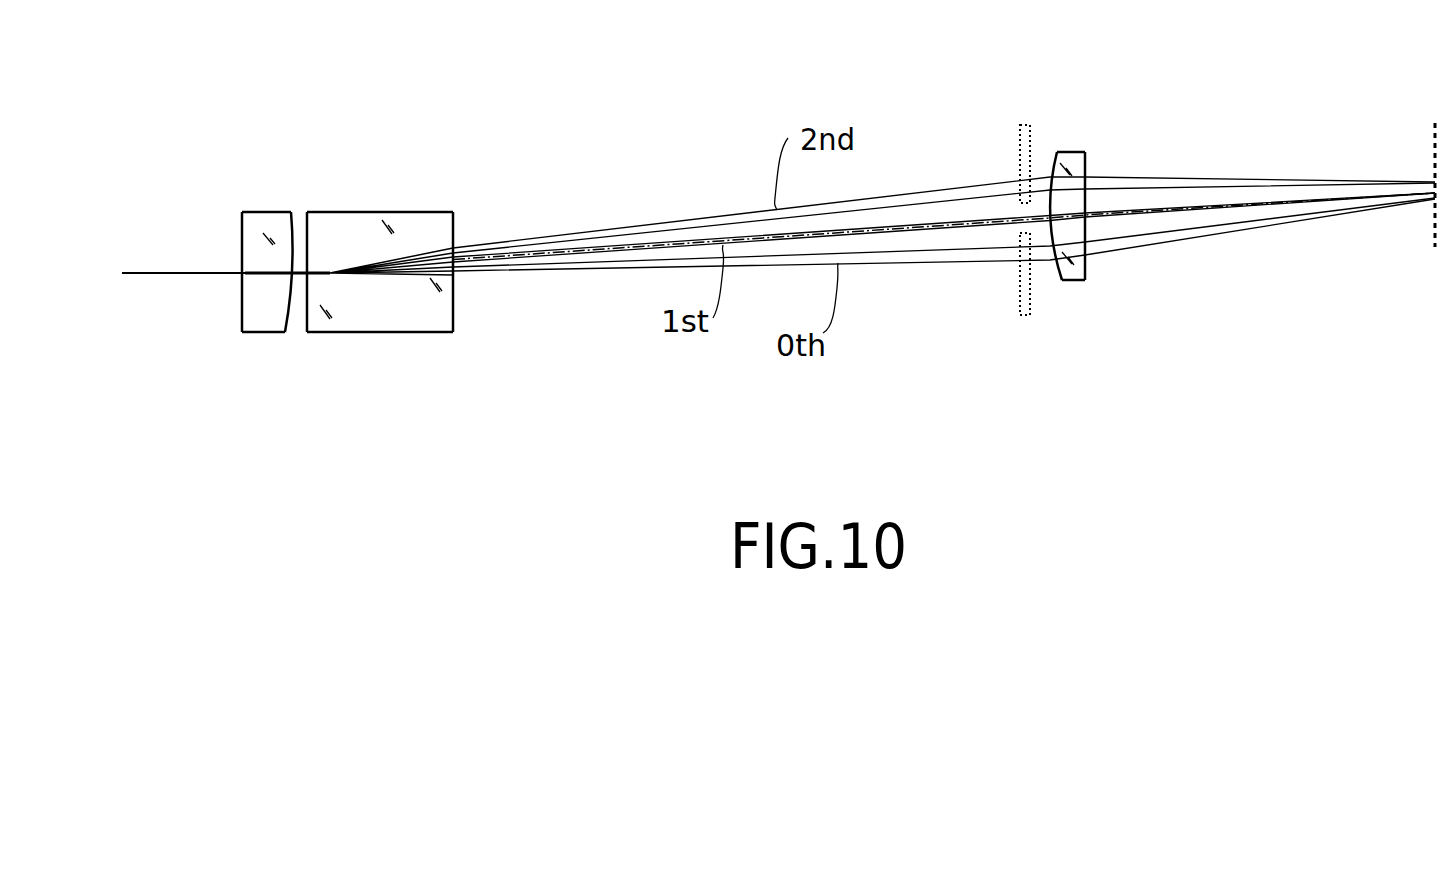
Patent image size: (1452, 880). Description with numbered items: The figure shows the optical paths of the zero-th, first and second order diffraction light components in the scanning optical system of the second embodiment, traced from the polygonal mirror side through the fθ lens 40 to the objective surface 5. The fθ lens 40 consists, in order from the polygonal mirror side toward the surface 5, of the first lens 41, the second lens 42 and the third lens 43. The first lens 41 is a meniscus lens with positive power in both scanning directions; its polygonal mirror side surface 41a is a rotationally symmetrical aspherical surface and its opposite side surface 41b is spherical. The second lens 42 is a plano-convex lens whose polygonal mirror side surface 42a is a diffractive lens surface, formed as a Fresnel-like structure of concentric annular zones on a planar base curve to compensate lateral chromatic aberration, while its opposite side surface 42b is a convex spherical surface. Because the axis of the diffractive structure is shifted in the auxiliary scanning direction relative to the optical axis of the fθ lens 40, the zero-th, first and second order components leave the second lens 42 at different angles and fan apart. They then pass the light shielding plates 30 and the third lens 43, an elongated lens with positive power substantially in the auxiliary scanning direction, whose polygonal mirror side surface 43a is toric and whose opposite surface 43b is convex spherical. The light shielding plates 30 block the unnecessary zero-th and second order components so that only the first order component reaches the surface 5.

The objective surface 5 is at (1430, 222).
The light shielding plates 30 is at (1020, 157).
The fθ lens 40 is at (503, 374).
The first lens 41 is at (265, 325).
The polygonal mirror side surface of the first lens 41a is at (243, 256).
The opposite side surface of the first lens 41b is at (293, 235).
The second lens 42 is at (388, 320).
The diffractive lens surface 42a is at (303, 225).
The opposite side surface of the second lens 42b is at (455, 228).
The third lens 43 is at (1077, 280).
The polygonal mirror side surface of the third lens 43a is at (1050, 167).
The opposite surface of the third lens 43b is at (1087, 163).